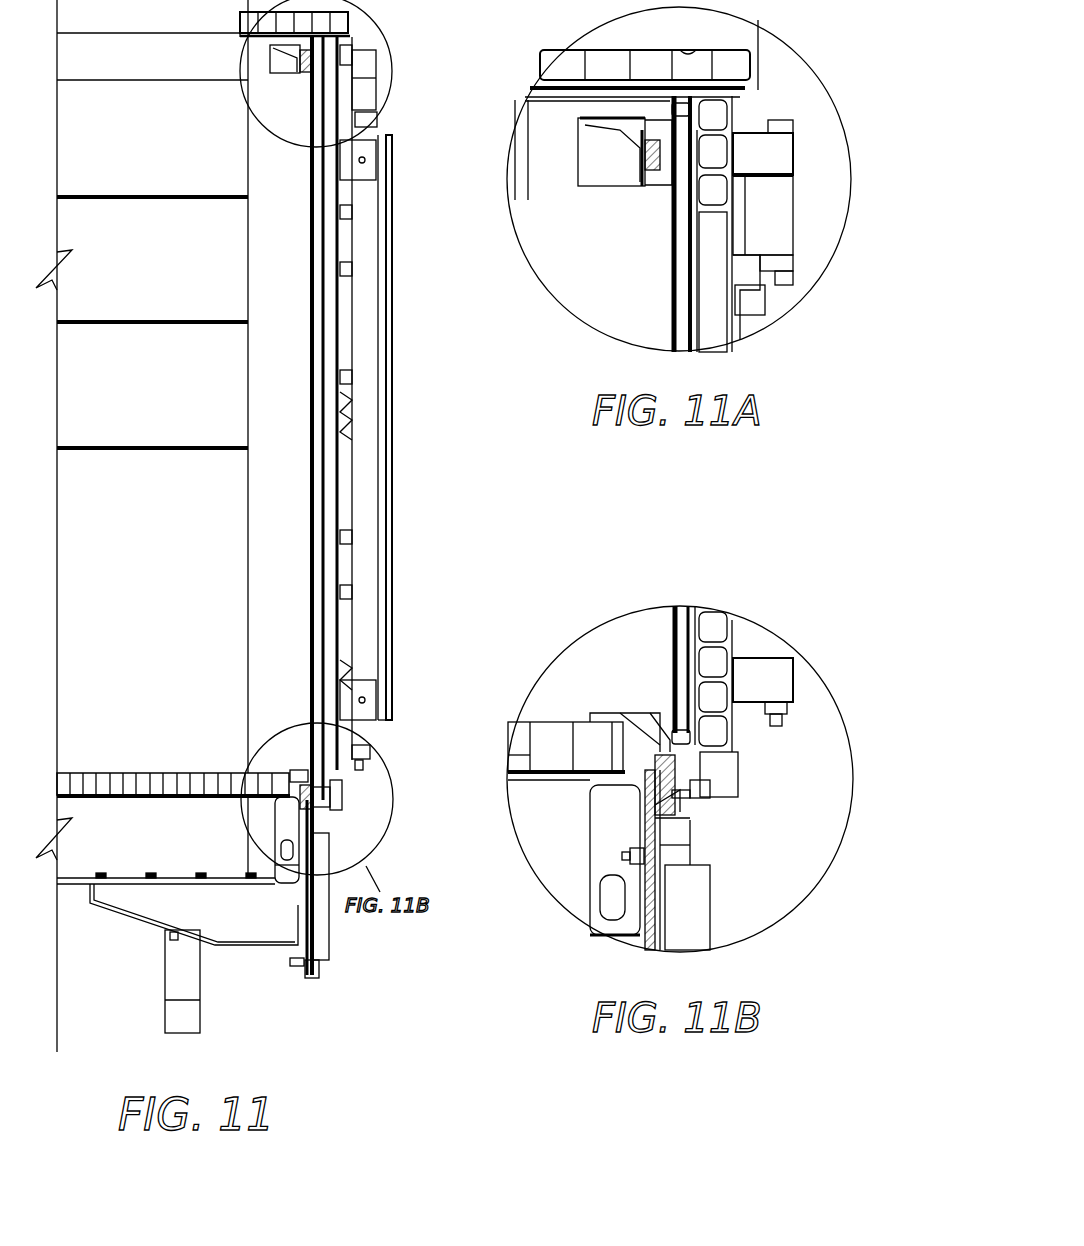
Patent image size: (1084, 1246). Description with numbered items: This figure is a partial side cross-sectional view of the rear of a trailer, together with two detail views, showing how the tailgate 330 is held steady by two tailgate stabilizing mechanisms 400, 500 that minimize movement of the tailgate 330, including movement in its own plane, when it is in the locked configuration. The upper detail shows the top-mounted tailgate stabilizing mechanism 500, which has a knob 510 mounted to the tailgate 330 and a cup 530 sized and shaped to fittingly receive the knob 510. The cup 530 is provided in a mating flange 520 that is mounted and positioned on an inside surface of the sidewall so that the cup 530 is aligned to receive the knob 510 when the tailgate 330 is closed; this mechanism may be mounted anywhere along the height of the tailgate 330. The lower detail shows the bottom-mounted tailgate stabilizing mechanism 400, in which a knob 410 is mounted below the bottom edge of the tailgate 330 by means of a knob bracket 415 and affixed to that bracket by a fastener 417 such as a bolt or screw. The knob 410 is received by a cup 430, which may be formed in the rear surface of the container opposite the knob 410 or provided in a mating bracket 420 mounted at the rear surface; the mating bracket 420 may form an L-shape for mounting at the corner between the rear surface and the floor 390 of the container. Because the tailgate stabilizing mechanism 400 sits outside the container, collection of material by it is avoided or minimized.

In FIG. 11, the tailgate 330 is at (330, 500).
In FIG. 11A, the tailgate 330 is at (722, 115).
In FIG. 11B, the tailgate 330 is at (712, 654).
In FIG. 11, the floor 390 is at (248, 775).
In FIG. 11B, the floor 390 is at (560, 730).
In FIG. 11, the tailgate stabilizing mechanism 400 is at (360, 797).
In FIG. 11B, the knob 410 is at (700, 812).
In FIG. 11B, the knob bracket 415 is at (728, 770).
In FIG. 11B, the fastener 417 is at (712, 790).
In FIG. 11B, the mating bracket 420 is at (645, 722).
In FIG. 11B, the cup 430 is at (690, 812).
In FIG. 11, the tailgate stabilizing mechanism 500 is at (290, 95).
In FIG. 11A, the knob 510 is at (665, 180).
In FIG. 11A, the mating flange 520 is at (598, 150).
In FIG. 11A, the cup 530 is at (640, 176).